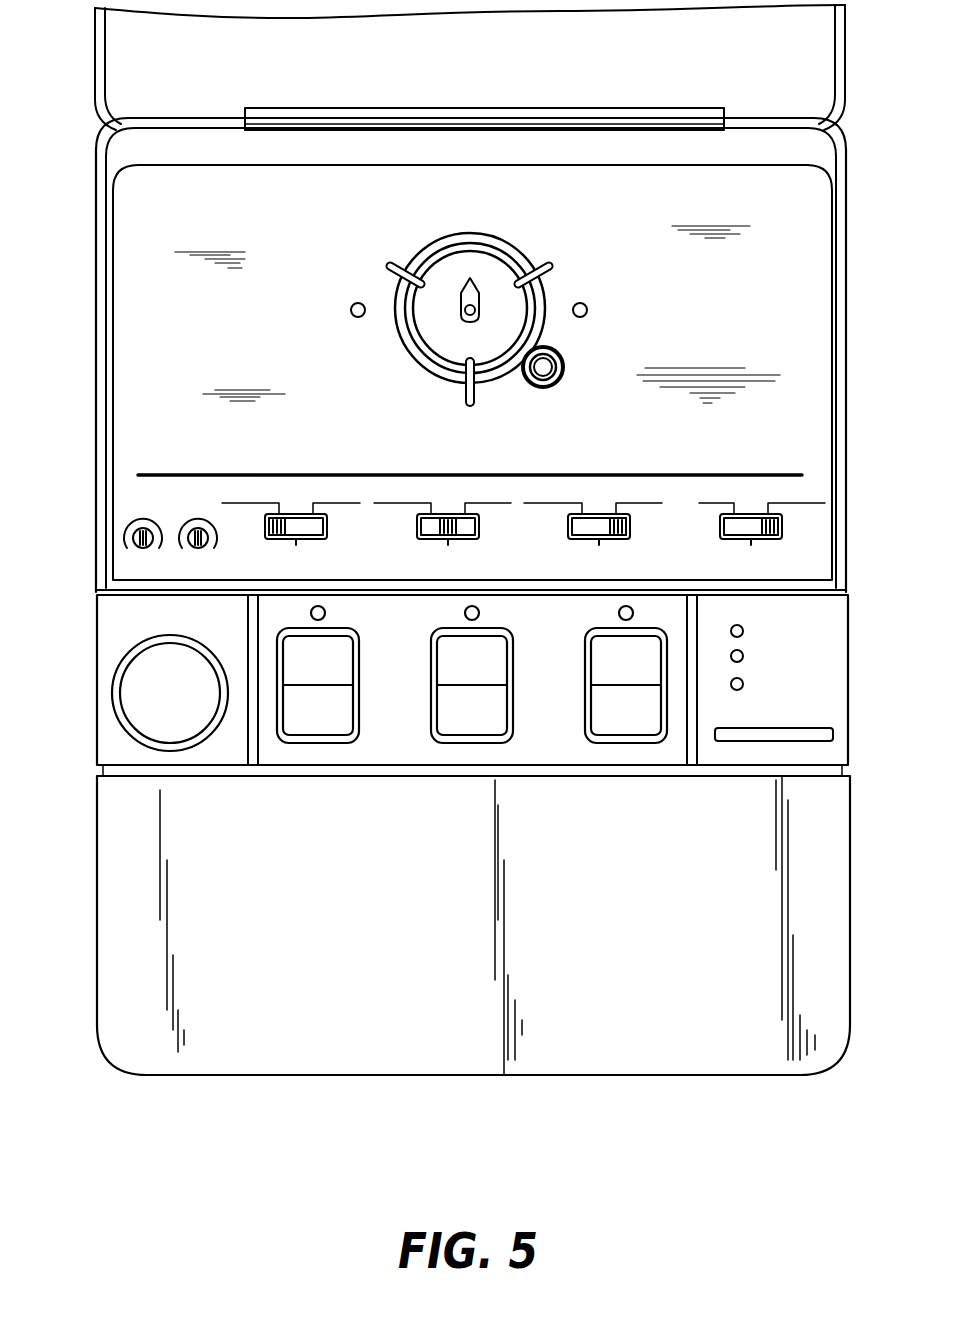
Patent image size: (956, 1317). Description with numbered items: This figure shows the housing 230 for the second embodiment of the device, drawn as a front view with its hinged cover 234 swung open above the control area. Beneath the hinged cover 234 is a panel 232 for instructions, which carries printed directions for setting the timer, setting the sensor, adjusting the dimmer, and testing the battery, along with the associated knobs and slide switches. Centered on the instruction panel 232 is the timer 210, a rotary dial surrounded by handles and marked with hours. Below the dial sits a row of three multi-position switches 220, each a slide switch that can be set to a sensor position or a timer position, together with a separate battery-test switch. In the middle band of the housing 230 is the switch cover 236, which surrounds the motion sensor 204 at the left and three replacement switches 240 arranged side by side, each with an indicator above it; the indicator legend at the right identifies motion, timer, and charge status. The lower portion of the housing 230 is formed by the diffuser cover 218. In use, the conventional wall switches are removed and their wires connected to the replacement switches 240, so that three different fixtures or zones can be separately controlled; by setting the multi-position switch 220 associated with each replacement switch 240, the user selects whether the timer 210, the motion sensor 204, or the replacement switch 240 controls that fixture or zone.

The hinged cover 234 is at (322, 84).
The housing 230 is at (94, 445).
The timer 210 is at (558, 292).
The panel for instructions 232 is at (358, 426).
The multi-position switch 220 is at (300, 502).
The motion sensor 204 is at (182, 705).
The replacement switch 240 is at (472, 674).
The switch cover 236 is at (395, 757).
The diffuser cover 218 is at (325, 900).